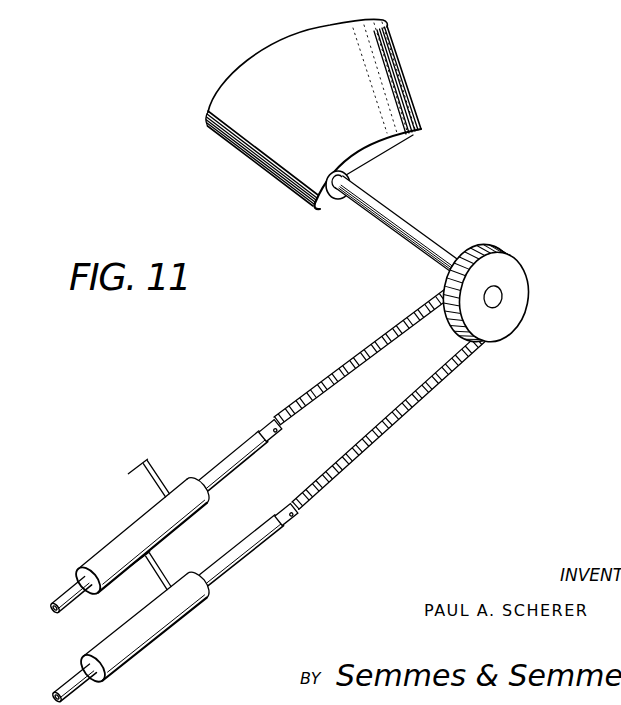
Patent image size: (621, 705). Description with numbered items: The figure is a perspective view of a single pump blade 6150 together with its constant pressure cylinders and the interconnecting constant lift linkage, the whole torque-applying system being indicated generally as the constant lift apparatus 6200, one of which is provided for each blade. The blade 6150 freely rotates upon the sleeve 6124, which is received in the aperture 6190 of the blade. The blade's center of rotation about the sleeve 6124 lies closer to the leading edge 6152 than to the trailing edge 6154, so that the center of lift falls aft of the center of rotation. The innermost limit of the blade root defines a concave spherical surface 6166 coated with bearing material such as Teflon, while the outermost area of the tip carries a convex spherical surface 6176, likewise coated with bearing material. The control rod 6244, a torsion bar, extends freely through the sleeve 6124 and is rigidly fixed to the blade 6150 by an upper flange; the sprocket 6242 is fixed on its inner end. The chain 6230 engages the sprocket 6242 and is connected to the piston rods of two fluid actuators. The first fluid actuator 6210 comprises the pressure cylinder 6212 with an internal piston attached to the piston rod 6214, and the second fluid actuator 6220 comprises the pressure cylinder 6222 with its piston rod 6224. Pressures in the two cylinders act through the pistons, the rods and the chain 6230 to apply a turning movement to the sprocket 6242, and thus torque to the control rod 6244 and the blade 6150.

The constant lift apparatus 6200 is at (0, 3).
The blade 6150 is at (403, 38).
The convex spherical surface 6176 is at (277, 50).
The trailing edge 6154 is at (411, 88).
The leading edge 6152 is at (253, 160).
The concave spherical surface 6166 is at (381, 153).
The sleeve 6124 is at (350, 172).
The aperture 6190 is at (333, 205).
The control rod 6244 is at (432, 239).
The sprocket 6242 is at (517, 290).
The chain 6230 is at (411, 396).
The fluid actuator 6210 is at (182, 482).
The pressure cylinder 6212 is at (121, 543).
The piston rod 6214 is at (237, 444).
The fluid actuator 6220 is at (212, 594).
The pressure cylinder 6222 is at (167, 620).
The piston rod 6224 is at (287, 525).